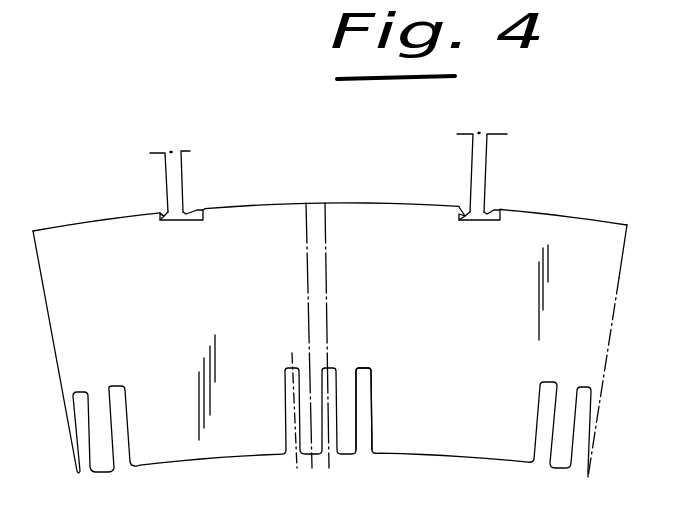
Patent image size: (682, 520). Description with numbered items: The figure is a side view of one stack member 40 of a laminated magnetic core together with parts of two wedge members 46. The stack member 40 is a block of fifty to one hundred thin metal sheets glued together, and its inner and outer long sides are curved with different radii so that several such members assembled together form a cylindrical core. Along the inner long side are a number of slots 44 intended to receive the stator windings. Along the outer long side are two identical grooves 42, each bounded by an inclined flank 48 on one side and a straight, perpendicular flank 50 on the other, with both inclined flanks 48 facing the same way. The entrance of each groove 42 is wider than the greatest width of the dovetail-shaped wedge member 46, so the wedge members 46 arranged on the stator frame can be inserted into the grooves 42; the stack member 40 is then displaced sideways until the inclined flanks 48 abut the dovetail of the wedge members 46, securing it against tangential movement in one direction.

The stack member 40 is at (607, 227).
The groove 42 is at (183, 221).
The slot 44 is at (372, 420).
The wedge member 46 is at (185, 162).
The inclined flank 48 is at (158, 213).
The straight, perpendicular flank 50 is at (210, 207).